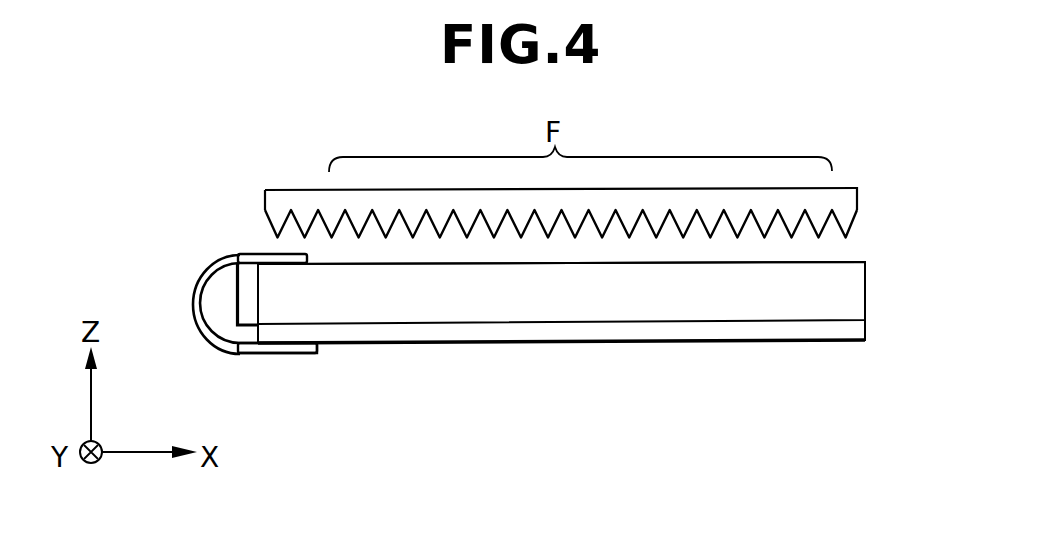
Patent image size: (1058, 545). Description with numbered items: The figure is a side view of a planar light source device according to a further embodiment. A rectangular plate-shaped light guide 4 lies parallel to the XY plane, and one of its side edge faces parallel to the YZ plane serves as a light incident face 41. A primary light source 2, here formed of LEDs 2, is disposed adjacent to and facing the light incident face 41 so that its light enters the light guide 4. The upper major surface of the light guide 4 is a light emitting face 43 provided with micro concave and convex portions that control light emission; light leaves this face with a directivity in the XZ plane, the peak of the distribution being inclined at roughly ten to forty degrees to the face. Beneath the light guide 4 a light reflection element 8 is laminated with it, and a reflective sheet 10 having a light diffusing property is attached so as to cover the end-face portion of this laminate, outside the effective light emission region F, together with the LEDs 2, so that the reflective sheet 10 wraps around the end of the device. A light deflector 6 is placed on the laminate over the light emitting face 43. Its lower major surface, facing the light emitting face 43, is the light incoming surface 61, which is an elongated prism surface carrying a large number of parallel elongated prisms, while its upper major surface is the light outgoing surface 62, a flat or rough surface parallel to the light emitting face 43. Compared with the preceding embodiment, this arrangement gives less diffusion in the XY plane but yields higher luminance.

The primary light source 2 is at (235, 290).
The light incident face 41 is at (262, 283).
The reflective sheet 10 is at (240, 356).
The light guide 4 is at (870, 303).
The light emitting face 43 is at (845, 262).
The light reflection element 8 is at (840, 331).
The light deflector 6 is at (868, 197).
The light incoming surface 61 is at (852, 221).
The light outgoing surface 62 is at (843, 187).